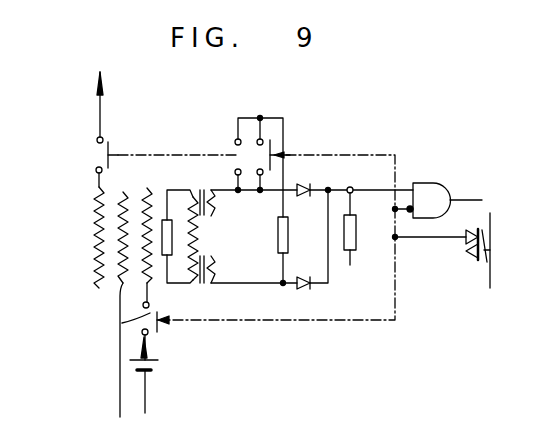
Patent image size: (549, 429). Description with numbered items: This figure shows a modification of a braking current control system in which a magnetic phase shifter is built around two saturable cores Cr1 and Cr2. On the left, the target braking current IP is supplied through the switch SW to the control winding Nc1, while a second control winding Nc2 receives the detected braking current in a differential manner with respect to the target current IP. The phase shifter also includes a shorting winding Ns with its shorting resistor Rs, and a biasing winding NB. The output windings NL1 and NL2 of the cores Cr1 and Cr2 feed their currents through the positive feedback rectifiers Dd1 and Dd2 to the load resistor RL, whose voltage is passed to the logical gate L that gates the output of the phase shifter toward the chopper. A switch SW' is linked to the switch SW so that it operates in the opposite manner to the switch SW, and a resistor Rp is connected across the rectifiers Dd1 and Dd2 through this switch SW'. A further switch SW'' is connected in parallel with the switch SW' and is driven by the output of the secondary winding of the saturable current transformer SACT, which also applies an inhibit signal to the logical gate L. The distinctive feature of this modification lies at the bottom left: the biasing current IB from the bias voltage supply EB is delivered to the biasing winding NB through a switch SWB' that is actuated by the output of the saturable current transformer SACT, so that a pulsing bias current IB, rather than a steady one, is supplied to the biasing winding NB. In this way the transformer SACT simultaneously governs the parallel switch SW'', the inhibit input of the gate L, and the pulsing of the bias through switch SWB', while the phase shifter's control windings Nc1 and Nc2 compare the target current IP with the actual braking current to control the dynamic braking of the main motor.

The target braking current IP is at (107, 104).
The switch SW is at (84, 142).
The control winding Nc1 is at (96, 238).
The control winding Nc2 is at (117, 288).
The biasing winding NB is at (146, 196).
The shorting resistor Rs is at (162, 217).
The shorting winding Ns is at (200, 234).
The saturable core Cr1 is at (199, 193).
The saturable core Cr2 is at (203, 286).
The output winding NL1 is at (215, 206).
The output winding NL2 is at (215, 264).
The switch SW' is at (243, 163).
The switch SW'' is at (295, 136).
The positive feedback rectifier Dd1 is at (304, 170).
The positive feedback rectifier Dd2 is at (300, 291).
The resistor Rp is at (288, 250).
The load resistor RL is at (357, 237).
The logical gate L is at (430, 183).
The saturable current transformer SACT is at (477, 263).
The switch SWB' is at (121, 329).
The biasing current IB is at (152, 349).
The bias voltage supply EB is at (155, 369).